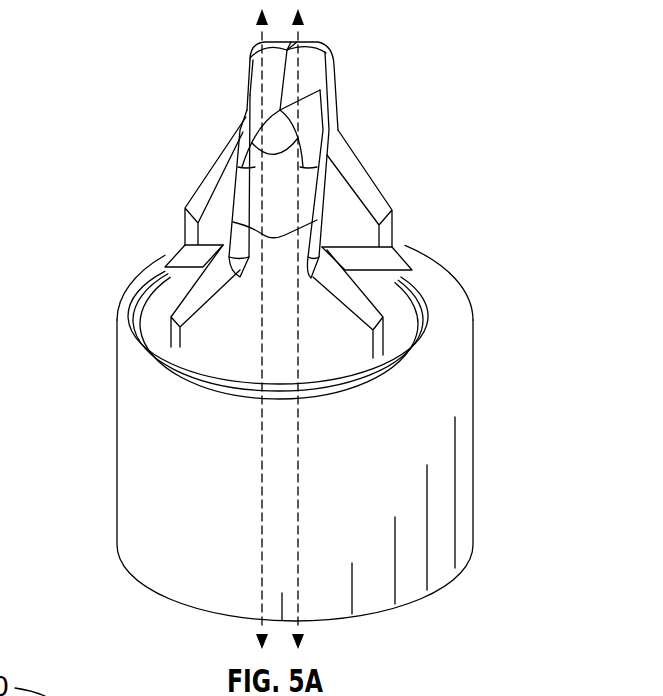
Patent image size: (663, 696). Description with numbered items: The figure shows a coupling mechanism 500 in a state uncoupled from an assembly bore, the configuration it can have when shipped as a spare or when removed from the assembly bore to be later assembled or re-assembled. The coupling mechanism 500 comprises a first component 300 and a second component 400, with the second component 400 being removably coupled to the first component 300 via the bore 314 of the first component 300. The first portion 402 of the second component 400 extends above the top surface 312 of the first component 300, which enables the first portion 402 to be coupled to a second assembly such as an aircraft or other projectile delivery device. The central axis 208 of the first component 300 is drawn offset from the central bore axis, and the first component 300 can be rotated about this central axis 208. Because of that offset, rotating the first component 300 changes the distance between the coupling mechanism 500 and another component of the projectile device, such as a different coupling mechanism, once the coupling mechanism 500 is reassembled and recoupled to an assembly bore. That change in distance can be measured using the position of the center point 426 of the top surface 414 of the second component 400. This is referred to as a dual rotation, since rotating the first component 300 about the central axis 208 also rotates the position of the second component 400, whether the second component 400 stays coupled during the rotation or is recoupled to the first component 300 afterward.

The coupling mechanism 500 is at (152, 41).
The first component 300 is at (247, 515).
The top surface 312 is at (437, 280).
The bore 314 is at (422, 347).
The first portion 402 is at (492, 40).
The central axis 208 is at (297, 73).
The center point 426 is at (283, 108).
The top surface 414 is at (275, 153).
The second component 400 is at (247, 352).